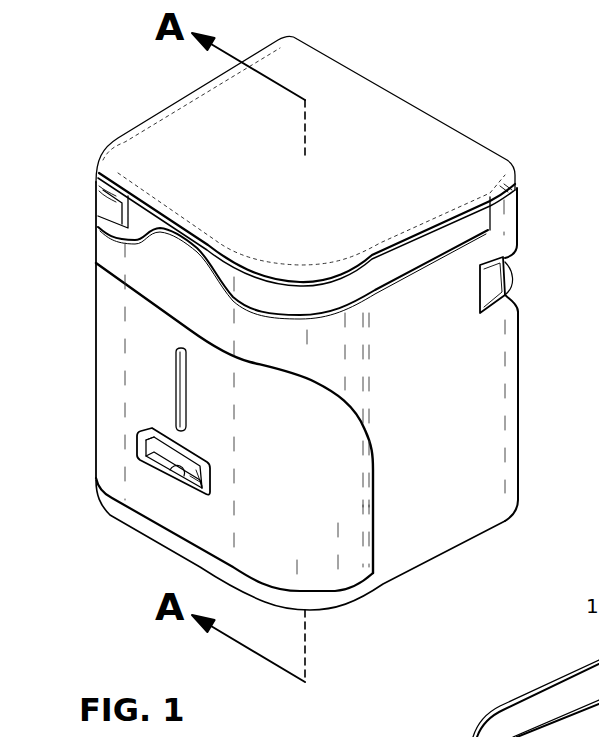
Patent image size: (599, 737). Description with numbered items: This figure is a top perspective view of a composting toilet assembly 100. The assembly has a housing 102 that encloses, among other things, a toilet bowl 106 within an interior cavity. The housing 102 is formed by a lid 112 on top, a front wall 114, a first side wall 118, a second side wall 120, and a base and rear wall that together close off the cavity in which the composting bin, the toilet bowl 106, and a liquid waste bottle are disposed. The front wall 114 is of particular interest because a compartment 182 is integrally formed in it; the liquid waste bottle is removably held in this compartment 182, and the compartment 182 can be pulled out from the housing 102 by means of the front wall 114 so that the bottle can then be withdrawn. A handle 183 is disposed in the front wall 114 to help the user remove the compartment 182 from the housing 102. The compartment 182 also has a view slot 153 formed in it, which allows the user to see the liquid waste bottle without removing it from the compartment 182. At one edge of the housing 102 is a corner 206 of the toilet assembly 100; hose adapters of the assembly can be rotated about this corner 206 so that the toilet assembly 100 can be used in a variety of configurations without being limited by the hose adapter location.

The composting toilet assembly 100 is at (530, 157).
The housing 102 is at (512, 394).
The toilet bowl 106 is at (580, 693).
The lid 112 is at (323, 67).
The front wall 114 is at (153, 514).
The first side wall 118 is at (493, 470).
The second side wall 120 is at (98, 227).
The view slot 153 is at (177, 370).
The compartment 182 is at (278, 545).
The handle 183 is at (140, 453).
The corner 206 is at (510, 277).